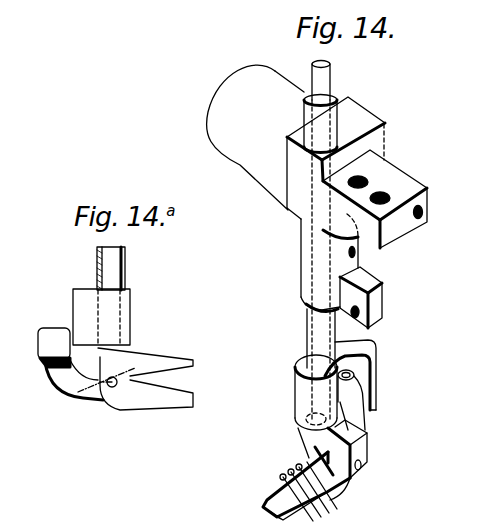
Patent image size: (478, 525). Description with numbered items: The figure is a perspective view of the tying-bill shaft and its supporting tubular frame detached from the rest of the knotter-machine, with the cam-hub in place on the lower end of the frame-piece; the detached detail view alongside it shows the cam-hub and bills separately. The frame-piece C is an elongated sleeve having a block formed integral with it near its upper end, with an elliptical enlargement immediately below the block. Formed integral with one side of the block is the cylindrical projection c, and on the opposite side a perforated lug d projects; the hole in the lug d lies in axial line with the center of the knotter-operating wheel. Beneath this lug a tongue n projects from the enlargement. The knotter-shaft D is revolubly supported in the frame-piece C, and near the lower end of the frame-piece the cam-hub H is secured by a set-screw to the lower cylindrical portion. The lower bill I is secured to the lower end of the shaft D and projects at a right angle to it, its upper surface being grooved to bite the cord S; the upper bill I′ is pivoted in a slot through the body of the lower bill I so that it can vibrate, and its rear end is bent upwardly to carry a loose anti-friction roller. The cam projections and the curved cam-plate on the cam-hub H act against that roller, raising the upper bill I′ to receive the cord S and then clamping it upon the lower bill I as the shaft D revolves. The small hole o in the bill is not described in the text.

In FIG. 14, the cylindrical projection c is at (255, 137).
In FIG. 14, the knotter-shaft D is at (330, 80).
In FIG. 14A, the knotter-shaft D is at (125, 273).
In FIG. 14, the perforated lug d is at (400, 175).
In FIG. 14, the tongue n is at (380, 290).
In FIG. 14, the frame-piece C is at (315, 327).
In FIG. 14, the cam-hub H is at (297, 398).
In FIG. 14A, the cam-hub H is at (97, 312).
In FIG. 14, the upper bill I′ is at (312, 461).
In FIG. 14A, the upper bill I′ is at (162, 400).
In FIG. 14, the lower bill I is at (352, 482).
In FIG. 14A, the lower bill I is at (76, 388).
In FIG. 14, the hole o is at (358, 465).
In FIG. 14, the cord S is at (322, 511).